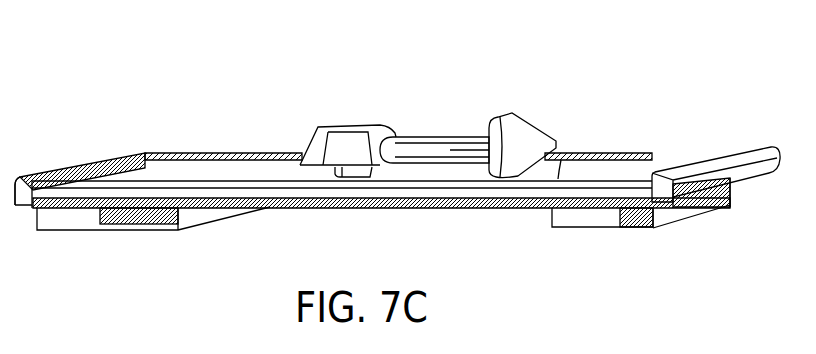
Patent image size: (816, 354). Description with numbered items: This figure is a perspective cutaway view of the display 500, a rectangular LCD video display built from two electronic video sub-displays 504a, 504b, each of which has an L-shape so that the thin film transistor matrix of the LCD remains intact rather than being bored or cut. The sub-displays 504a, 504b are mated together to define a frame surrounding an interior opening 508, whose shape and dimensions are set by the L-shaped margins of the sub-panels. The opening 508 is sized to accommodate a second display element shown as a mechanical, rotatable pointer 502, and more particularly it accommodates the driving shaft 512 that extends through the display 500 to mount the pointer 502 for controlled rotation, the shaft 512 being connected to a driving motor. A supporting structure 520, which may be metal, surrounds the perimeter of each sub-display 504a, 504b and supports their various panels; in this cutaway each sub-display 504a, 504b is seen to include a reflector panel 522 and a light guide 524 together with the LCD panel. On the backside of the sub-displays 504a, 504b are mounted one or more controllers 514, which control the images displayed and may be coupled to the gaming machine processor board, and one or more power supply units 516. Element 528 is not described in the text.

The display 500 is at (738, 92).
The pointer 502 is at (439, 137).
The sub-display 504a is at (653, 157).
The sub-display 504b is at (207, 158).
The interior opening 508 is at (82, 162).
The driving shaft 512 is at (355, 212).
The controller 514 is at (47, 223).
The power supply unit 516 is at (565, 208).
The supporting structure 520 is at (515, 208).
The reflector panel 522 is at (587, 195).
The light guide 524 is at (622, 228).
The cone guide 528 is at (575, 154).